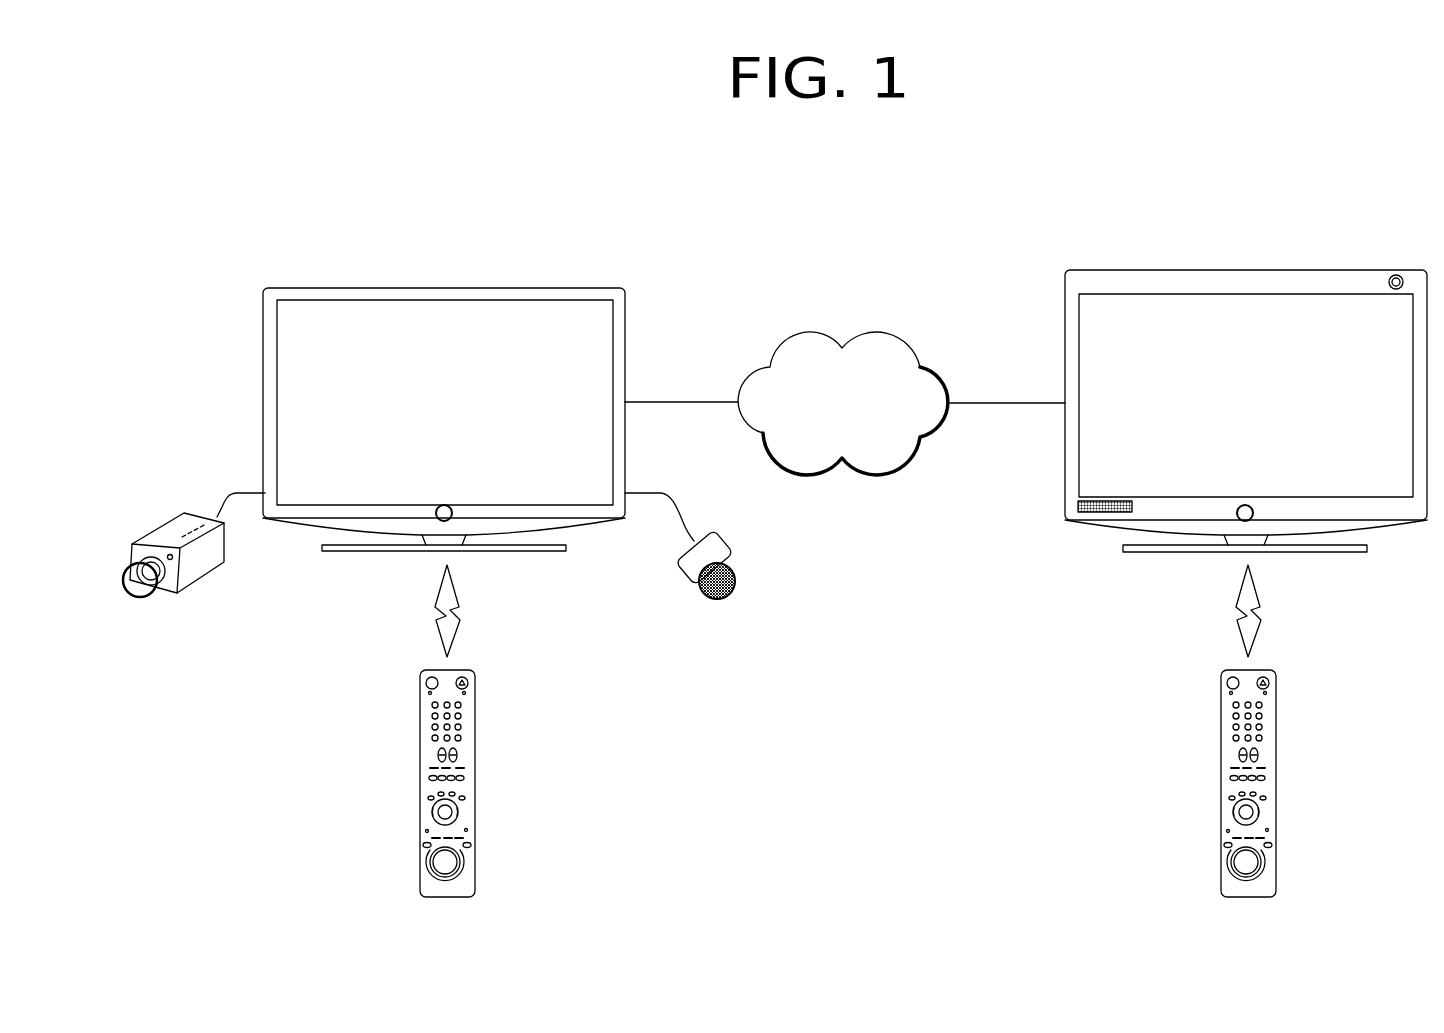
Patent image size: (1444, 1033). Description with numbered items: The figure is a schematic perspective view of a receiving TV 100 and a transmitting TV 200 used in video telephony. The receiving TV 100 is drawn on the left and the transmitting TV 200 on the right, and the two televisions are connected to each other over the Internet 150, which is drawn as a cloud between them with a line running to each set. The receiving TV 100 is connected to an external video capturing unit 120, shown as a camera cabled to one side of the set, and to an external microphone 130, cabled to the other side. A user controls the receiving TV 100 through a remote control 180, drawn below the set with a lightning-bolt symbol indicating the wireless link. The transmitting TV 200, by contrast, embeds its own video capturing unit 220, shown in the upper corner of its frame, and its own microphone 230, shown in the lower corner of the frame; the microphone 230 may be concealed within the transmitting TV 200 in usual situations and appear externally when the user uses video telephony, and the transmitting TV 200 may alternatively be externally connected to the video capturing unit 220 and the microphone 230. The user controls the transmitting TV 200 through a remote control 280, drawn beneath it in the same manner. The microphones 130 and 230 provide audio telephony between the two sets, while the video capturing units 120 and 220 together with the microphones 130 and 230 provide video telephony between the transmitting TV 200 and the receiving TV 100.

The receiving TV 100 is at (487, 288).
The video capturing unit 120 is at (160, 525).
The microphone 130 is at (726, 556).
The Internet 150 is at (873, 332).
The remote control 180 is at (477, 868).
The transmitting TV 200 is at (1247, 270).
The video capturing unit 220 is at (1397, 275).
The microphone 230 is at (1093, 512).
The remote control 280 is at (1278, 868).